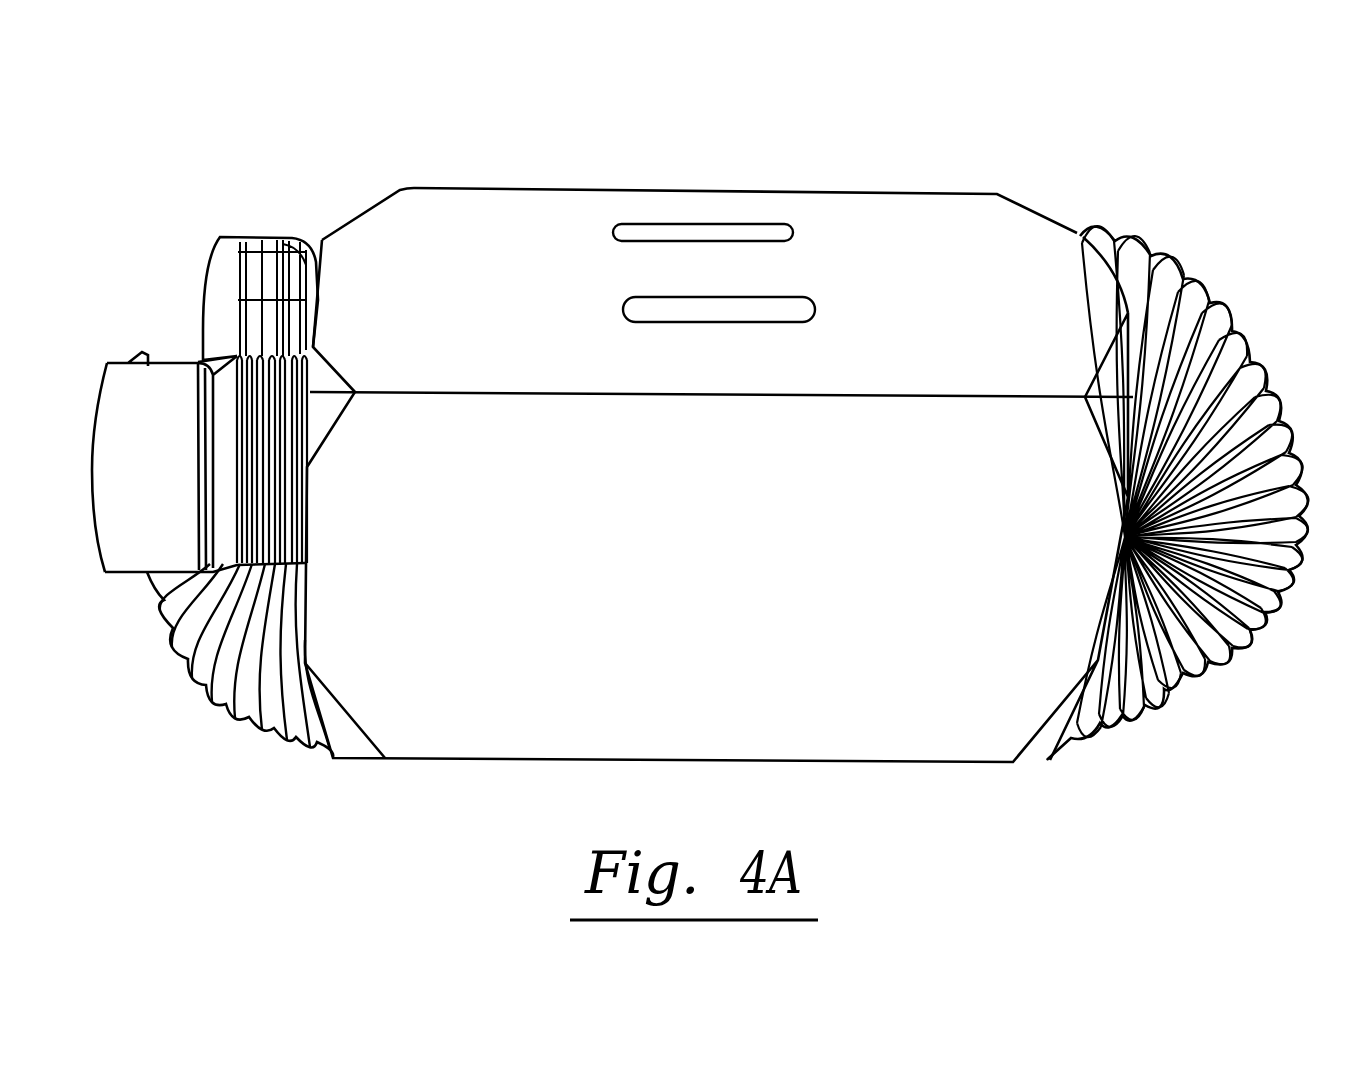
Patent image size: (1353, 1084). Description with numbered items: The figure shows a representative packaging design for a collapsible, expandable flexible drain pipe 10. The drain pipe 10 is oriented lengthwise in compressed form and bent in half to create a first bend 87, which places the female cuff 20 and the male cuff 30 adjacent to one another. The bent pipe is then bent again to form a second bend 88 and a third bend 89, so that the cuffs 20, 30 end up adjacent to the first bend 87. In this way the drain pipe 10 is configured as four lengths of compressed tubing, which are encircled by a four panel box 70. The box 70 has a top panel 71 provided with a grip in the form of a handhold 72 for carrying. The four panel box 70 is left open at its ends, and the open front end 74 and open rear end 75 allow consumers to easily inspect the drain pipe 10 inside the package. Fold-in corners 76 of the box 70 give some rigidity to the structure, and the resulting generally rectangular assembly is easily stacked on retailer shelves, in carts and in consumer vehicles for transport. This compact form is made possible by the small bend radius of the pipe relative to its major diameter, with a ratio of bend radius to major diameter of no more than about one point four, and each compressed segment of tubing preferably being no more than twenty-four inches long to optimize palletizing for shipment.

The drain pipe 10 is at (1104, 757).
The female cuff 20 is at (180, 313).
The male cuff 30 is at (123, 572).
The four panel box 70 is at (462, 203).
The top panel 71 is at (922, 301).
The handhold 72 is at (788, 310).
The open front end 74 is at (178, 270).
The open rear end 75 is at (1188, 708).
The fold-in corners 76 is at (1048, 213).
The first bend 87 is at (195, 680).
The second bend 88 is at (1258, 620).
The third bend 89 is at (1207, 287).